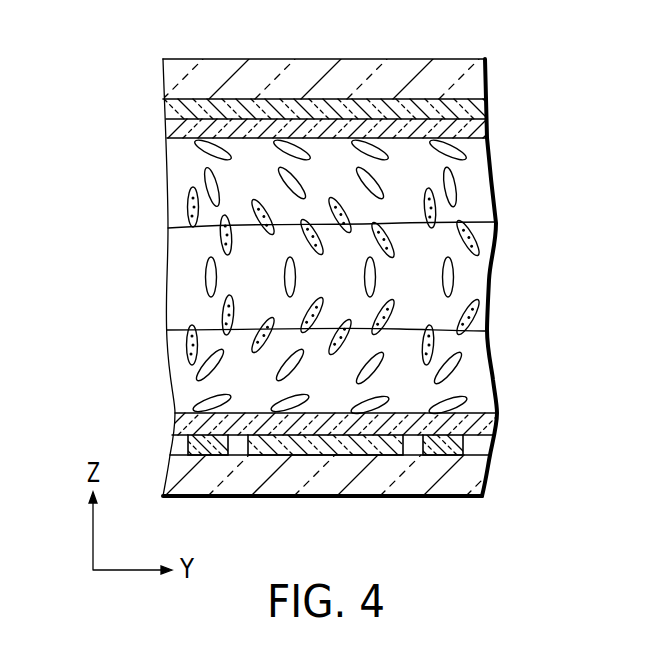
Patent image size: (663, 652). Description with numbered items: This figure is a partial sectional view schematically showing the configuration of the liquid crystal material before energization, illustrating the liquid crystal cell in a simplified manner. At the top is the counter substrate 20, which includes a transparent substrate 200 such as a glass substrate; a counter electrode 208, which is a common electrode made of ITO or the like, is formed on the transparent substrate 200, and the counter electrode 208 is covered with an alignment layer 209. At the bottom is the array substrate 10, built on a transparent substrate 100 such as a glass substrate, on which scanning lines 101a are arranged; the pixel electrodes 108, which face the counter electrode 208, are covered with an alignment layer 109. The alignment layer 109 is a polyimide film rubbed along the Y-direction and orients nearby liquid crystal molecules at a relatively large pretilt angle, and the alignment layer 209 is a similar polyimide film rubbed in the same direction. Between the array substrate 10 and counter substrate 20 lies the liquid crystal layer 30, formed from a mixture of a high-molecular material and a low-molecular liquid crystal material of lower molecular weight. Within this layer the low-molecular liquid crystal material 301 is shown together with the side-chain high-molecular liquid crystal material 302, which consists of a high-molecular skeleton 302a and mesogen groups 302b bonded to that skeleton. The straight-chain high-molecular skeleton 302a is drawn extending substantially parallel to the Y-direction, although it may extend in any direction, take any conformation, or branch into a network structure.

The transparent substrate 200 is at (309, 72).
The counter electrode 208 is at (172, 107).
The alignment layer 209 is at (176, 129).
The counter substrate 20 is at (327, 81).
The liquid crystal layer 30 is at (292, 277).
The low-molecular liquid crystal material 301 is at (207, 275).
The side-chain high-molecular liquid crystal material 302 is at (254, 276).
The high-molecular skeleton 302a is at (214, 313).
The mesogen group 302b is at (186, 341).
The array substrate 10 is at (297, 483).
The alignment layer 109 is at (192, 424).
The scanning lines 101a is at (212, 446).
The pixel electrodes 108 is at (310, 446).
The transparent substrate 100 is at (378, 481).